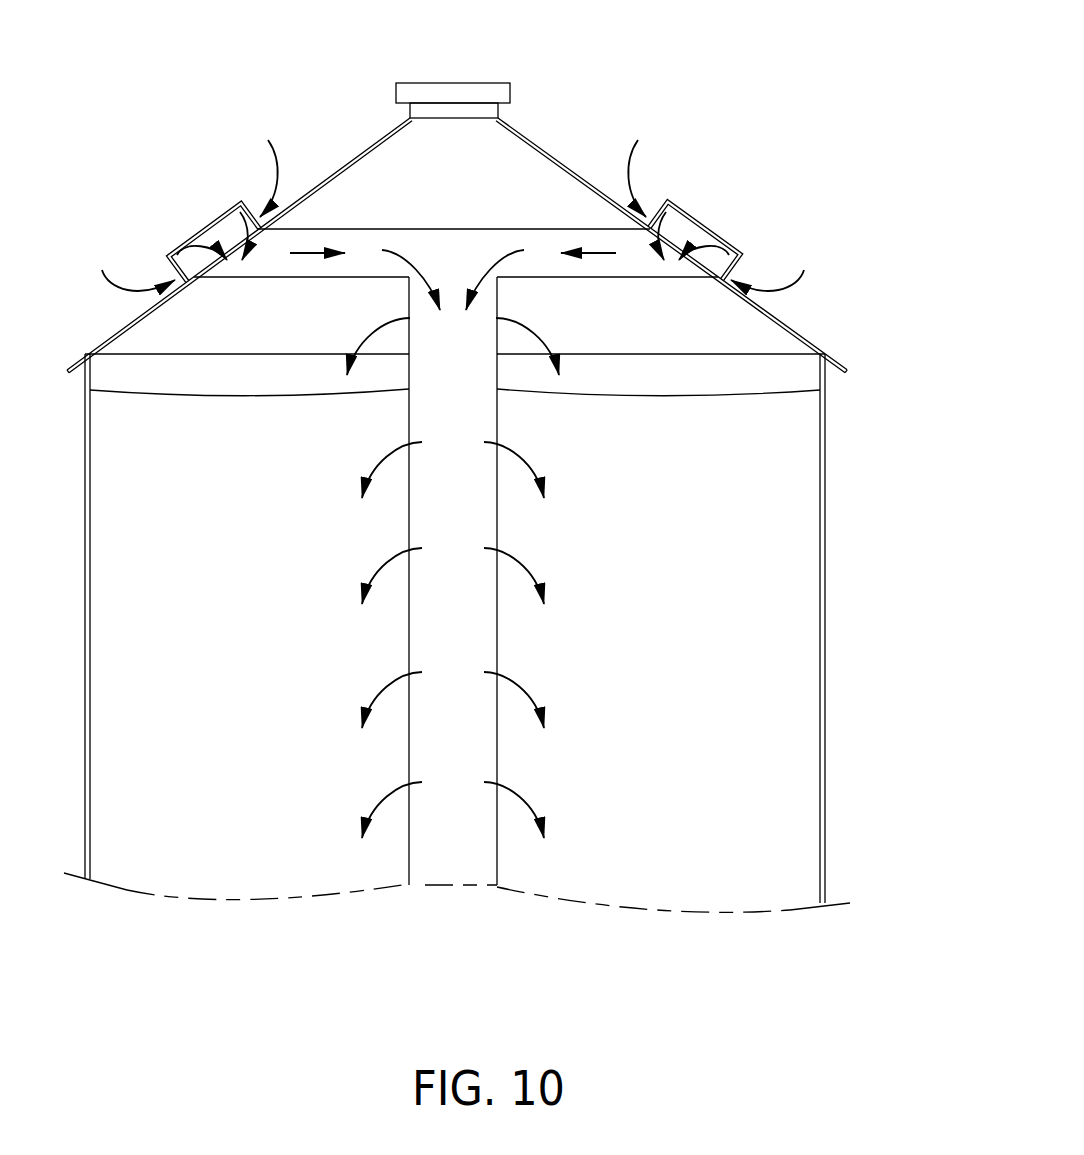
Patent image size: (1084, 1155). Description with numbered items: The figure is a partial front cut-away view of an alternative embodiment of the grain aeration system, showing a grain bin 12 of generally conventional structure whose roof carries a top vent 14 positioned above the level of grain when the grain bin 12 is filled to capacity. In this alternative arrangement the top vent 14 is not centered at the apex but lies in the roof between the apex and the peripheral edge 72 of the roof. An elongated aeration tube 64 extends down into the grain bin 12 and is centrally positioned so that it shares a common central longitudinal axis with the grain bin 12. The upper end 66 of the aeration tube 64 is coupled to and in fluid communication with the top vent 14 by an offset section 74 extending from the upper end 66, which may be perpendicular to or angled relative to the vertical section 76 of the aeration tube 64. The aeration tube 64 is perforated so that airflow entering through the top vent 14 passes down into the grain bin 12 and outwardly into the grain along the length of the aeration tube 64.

The grain bin 12 is at (825, 683).
The top vent 14 is at (193, 217).
The aeration tube 64 is at (510, 630).
The upper end 66 is at (455, 228).
The peripheral edge 72 is at (840, 372).
The offset section 74 is at (308, 243).
The vertical section 76 is at (485, 733).